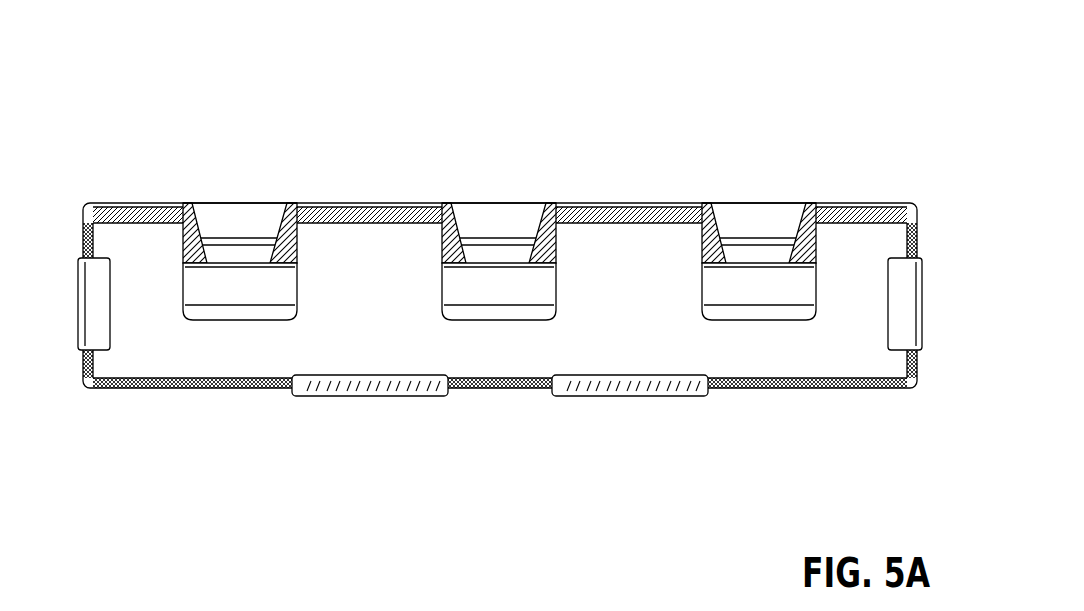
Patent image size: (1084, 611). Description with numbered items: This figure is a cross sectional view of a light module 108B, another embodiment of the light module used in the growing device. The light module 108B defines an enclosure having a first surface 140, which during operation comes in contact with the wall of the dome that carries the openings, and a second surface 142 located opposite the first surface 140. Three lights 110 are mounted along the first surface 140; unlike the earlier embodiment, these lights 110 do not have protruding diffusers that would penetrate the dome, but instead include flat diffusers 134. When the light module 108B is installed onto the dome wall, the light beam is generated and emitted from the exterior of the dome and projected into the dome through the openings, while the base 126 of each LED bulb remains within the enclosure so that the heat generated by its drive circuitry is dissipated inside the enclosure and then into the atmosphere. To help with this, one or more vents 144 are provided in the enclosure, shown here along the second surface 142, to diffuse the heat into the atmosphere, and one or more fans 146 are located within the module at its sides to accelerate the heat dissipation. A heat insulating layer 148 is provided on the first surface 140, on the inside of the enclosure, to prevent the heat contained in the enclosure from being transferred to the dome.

The light module 108B is at (931, 204).
The lights 110 is at (715, 141).
The base 126 is at (225, 320).
The flat diffusers 134 is at (225, 203).
The first surface 140 is at (327, 203).
The second surface 142 is at (600, 223).
The vents 144 is at (352, 397).
The fans 146 is at (78, 305).
The heat insulating layer 148 is at (343, 223).